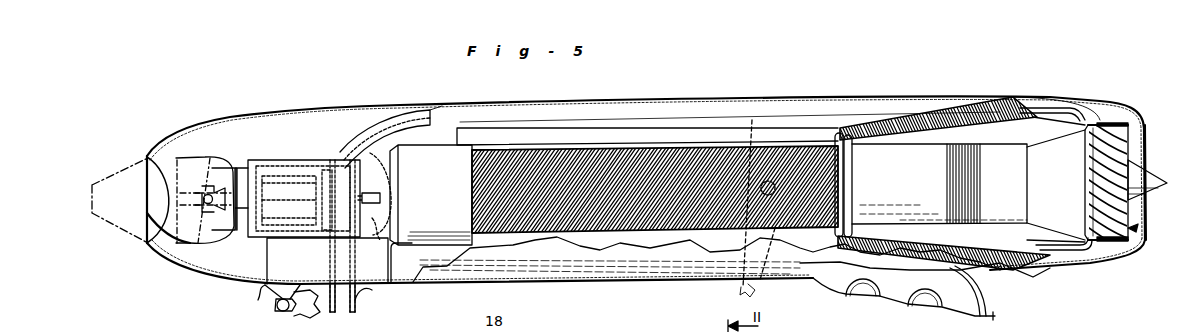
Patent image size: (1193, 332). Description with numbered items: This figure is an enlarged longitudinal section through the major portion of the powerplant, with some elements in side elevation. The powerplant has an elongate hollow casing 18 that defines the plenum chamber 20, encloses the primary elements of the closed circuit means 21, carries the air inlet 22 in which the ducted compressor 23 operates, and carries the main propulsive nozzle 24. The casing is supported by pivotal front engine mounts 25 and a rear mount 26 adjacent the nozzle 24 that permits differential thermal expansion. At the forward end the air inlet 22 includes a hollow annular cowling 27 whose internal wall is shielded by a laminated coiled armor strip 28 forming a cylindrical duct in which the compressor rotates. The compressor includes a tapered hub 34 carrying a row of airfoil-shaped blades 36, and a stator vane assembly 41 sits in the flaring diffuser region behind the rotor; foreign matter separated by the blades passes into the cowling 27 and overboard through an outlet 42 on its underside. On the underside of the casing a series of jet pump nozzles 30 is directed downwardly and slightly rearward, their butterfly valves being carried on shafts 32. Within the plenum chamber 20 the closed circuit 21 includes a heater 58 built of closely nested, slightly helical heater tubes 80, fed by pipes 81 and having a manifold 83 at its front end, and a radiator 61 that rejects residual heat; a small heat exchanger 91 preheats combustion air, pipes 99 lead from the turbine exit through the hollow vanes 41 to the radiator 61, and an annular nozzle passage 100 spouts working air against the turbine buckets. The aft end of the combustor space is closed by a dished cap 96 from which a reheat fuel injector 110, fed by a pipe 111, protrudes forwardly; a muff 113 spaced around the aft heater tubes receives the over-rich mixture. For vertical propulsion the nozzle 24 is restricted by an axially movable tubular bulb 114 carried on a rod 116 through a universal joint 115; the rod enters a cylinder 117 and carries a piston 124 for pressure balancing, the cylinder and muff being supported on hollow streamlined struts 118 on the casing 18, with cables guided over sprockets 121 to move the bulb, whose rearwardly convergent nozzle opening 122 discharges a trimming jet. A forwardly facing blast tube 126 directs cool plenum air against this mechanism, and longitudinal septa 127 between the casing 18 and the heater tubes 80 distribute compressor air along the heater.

The casing 18 is at (360, 105).
The plenum chamber 20 is at (690, 106).
The closed circuit means 21 is at (824, 108).
The air inlet 22 is at (1140, 230).
The ducted compressor 23 is at (1140, 130).
The main propulsive nozzle 24 is at (157, 147).
The front engine mounts 25 is at (757, 126).
The rear mount 26 is at (265, 306).
The cowling 27 is at (1110, 120).
The laminated coiled armor strip 28 is at (1127, 138).
The jet pump nozzles 30 is at (880, 300).
The shafts 32 is at (940, 306).
The hub 34 is at (1160, 180).
The blades 36 is at (1108, 244).
The stator vane assembly 41 is at (1066, 130).
The outlet 42 is at (1036, 258).
The heater 58 is at (648, 205).
The radiator 61 is at (950, 116).
The heater tubes 80 is at (560, 160).
The pipes 81 is at (513, 146).
The manifold 83 is at (850, 186).
The heat exchanger 91 is at (958, 180).
The dished plate or cap 96 is at (382, 235).
The pipes 99 is at (1026, 112).
The annular nozzle passage 100 is at (346, 310).
The fuel injector 110 is at (404, 263).
The pipe 111 is at (438, 106).
The muff 113 is at (412, 199).
The tubular bulb 114 is at (196, 158).
The universal joint 115 is at (204, 246).
The rod 116 is at (243, 215).
The cylinder 117 is at (280, 170).
The hollow streamlined struts 118 is at (281, 270).
The sprockets 121 is at (345, 160).
The nozzle opening 122 is at (155, 238).
The piston 124 is at (300, 222).
The blast tube 126 is at (382, 110).
The septa 127 is at (618, 130).